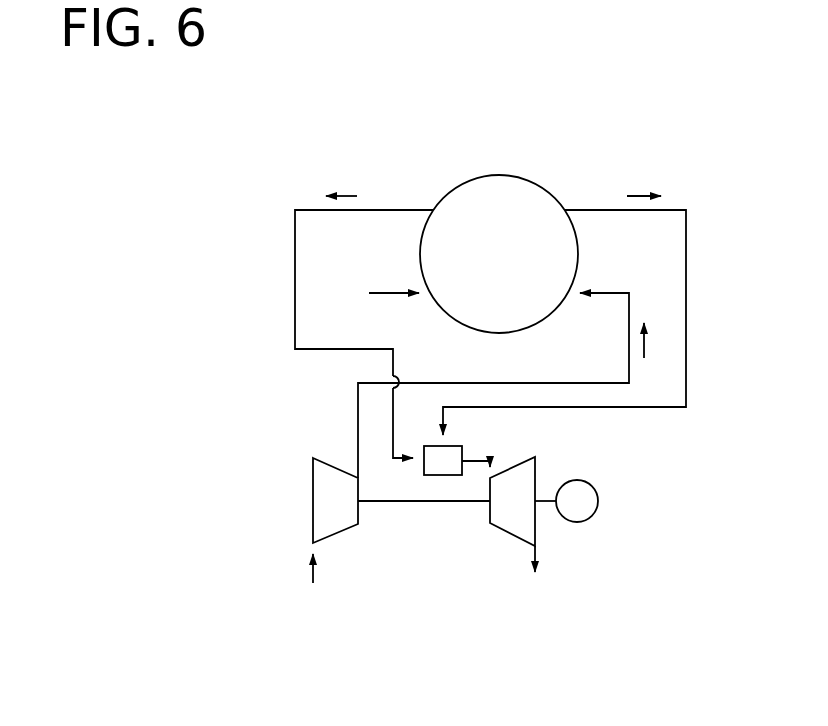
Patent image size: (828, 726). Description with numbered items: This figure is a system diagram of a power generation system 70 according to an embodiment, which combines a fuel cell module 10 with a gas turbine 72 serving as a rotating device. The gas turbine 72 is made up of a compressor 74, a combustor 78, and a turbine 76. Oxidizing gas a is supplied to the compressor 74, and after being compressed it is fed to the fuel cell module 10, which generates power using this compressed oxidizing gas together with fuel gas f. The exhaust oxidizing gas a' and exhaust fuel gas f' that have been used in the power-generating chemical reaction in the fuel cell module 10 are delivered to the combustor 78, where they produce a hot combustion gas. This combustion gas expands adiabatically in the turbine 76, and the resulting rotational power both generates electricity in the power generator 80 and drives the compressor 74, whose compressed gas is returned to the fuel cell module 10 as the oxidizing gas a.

The power generation system 70 is at (498, 102).
The fuel cell module 10 is at (519, 175).
The gas turbine 72 is at (308, 438).
The compressor 74 is at (312, 492).
The turbine 76 is at (513, 536).
The combustor 78 is at (463, 452).
The power generator 80 is at (598, 491).